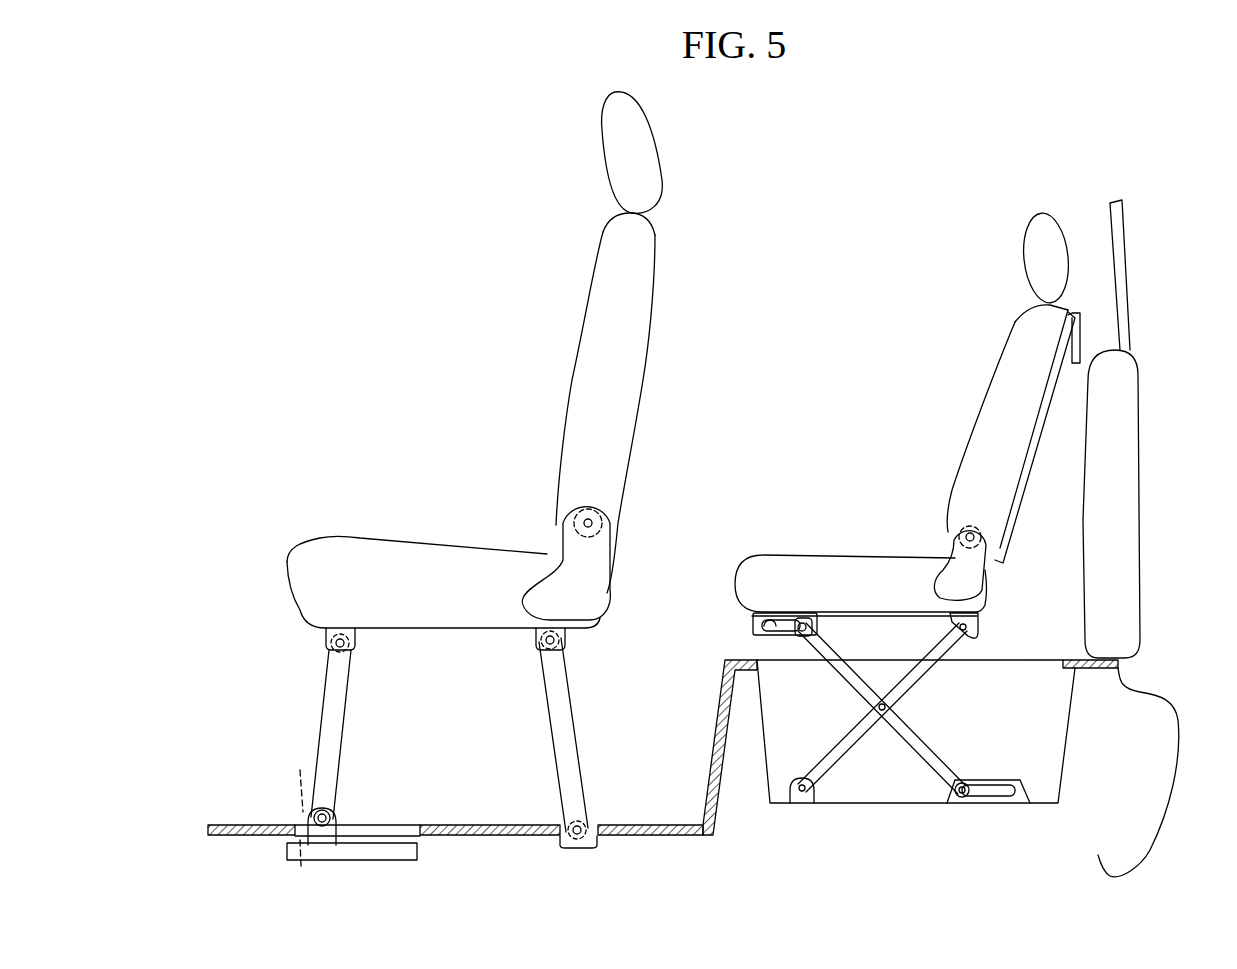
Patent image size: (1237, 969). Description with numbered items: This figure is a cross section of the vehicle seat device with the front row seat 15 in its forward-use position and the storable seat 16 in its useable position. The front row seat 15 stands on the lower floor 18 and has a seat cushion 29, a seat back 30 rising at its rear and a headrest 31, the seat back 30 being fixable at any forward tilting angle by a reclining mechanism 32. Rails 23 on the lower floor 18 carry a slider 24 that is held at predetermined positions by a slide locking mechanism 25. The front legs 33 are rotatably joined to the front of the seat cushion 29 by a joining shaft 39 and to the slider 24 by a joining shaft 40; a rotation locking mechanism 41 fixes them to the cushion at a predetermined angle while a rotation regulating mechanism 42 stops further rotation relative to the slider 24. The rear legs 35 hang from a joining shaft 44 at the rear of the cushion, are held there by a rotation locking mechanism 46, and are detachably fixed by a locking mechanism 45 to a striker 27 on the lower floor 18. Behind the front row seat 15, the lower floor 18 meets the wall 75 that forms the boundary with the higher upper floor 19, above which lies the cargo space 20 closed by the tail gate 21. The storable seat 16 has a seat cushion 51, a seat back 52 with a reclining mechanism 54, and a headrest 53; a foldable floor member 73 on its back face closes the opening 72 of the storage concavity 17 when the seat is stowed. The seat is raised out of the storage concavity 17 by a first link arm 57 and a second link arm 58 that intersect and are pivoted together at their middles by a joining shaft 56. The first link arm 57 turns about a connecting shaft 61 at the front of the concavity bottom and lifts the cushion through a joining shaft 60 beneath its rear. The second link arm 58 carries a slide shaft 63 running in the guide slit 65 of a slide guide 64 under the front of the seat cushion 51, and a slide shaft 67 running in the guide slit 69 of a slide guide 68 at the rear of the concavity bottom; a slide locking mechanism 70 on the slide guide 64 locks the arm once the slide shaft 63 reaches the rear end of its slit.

The front row seat 15 is at (515, 366).
The storable seat 16 is at (918, 368).
The storage concavity 17 is at (895, 805).
The lower floor 18 is at (473, 826).
The upper floor 19 is at (737, 658).
The cargo space 20 is at (1047, 540).
The tail gate 21 is at (1130, 298).
The rails 23 is at (380, 860).
The slider 24 is at (307, 818).
The slide locking mechanism 25 is at (299, 876).
The striker 27 is at (577, 848).
The seat cushion 29 is at (385, 555).
The seat back 30 is at (572, 425).
The headrest 31 is at (622, 155).
The reclining mechanism 32 is at (616, 527).
The front legs 33 is at (328, 712).
The rear legs 35 is at (558, 728).
The joining shaft 39 is at (325, 650).
The joining shaft 40 is at (332, 815).
The rotation locking mechanism 41 is at (350, 645).
The rotation regulating mechanism 42 is at (300, 770).
The joining shaft 44 is at (565, 642).
The locking mechanism 45 is at (578, 825).
The rotation locking mechanism 46 is at (540, 640).
The seat cushion 51 is at (848, 568).
The seat back 52 is at (990, 420).
The headrest 53 is at (1034, 257).
The reclining mechanism 54 is at (950, 538).
The joining shaft 56 is at (892, 697).
The first link arm 57 is at (932, 675).
The second link arm 58 is at (940, 752).
The joining shaft 60 is at (978, 628).
The connecting shaft 61 is at (800, 805).
The slide shaft 63 is at (802, 637).
The slide guide 64 is at (755, 625).
The guide slit 65 is at (768, 618).
The slide shaft 67 is at (958, 805).
The slide guide 68 is at (995, 780).
The guide slit 69 is at (1002, 797).
The slide locking mechanism 70 is at (800, 620).
The opening 72 is at (1043, 668).
The floor member 73 is at (1040, 437).
The wall 75 is at (713, 740).